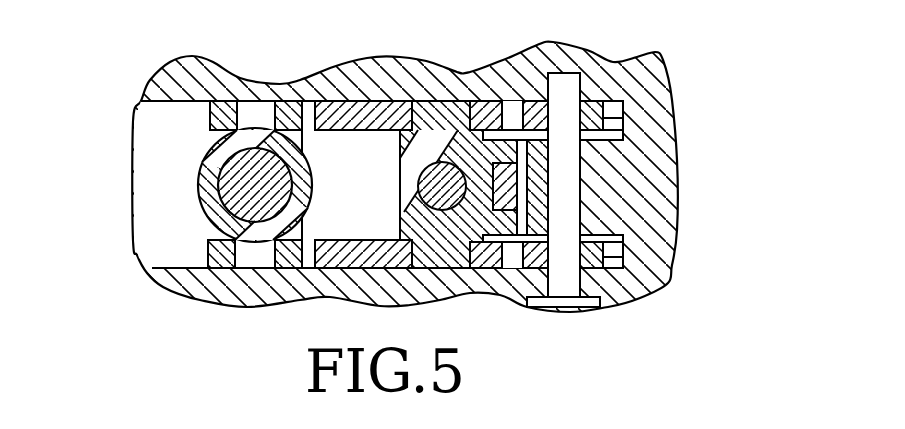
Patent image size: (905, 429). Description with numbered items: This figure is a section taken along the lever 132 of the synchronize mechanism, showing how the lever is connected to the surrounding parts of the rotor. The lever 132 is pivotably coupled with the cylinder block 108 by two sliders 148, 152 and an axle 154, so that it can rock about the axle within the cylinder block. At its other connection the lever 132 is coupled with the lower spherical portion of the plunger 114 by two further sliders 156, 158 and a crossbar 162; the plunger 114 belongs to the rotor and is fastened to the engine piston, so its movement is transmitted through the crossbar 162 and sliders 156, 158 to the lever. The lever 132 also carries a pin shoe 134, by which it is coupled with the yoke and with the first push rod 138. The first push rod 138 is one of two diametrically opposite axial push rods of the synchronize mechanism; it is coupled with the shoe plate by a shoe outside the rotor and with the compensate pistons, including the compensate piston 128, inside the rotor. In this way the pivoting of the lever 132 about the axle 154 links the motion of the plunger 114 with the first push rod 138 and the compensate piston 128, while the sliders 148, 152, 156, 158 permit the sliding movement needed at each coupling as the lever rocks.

The cylinder block 108 is at (668, 283).
The plunger 114 is at (210, 164).
The compensate piston 128 is at (412, 218).
The lever 132 is at (322, 84).
The pin shoe 134 is at (457, 101).
The first push rod 138 is at (417, 180).
The slider 148 is at (620, 258).
The slider 152 is at (623, 120).
The axle 154 is at (570, 205).
The slider 156 is at (210, 255).
The slider 158 is at (210, 112).
The crossbar 162 is at (208, 212).